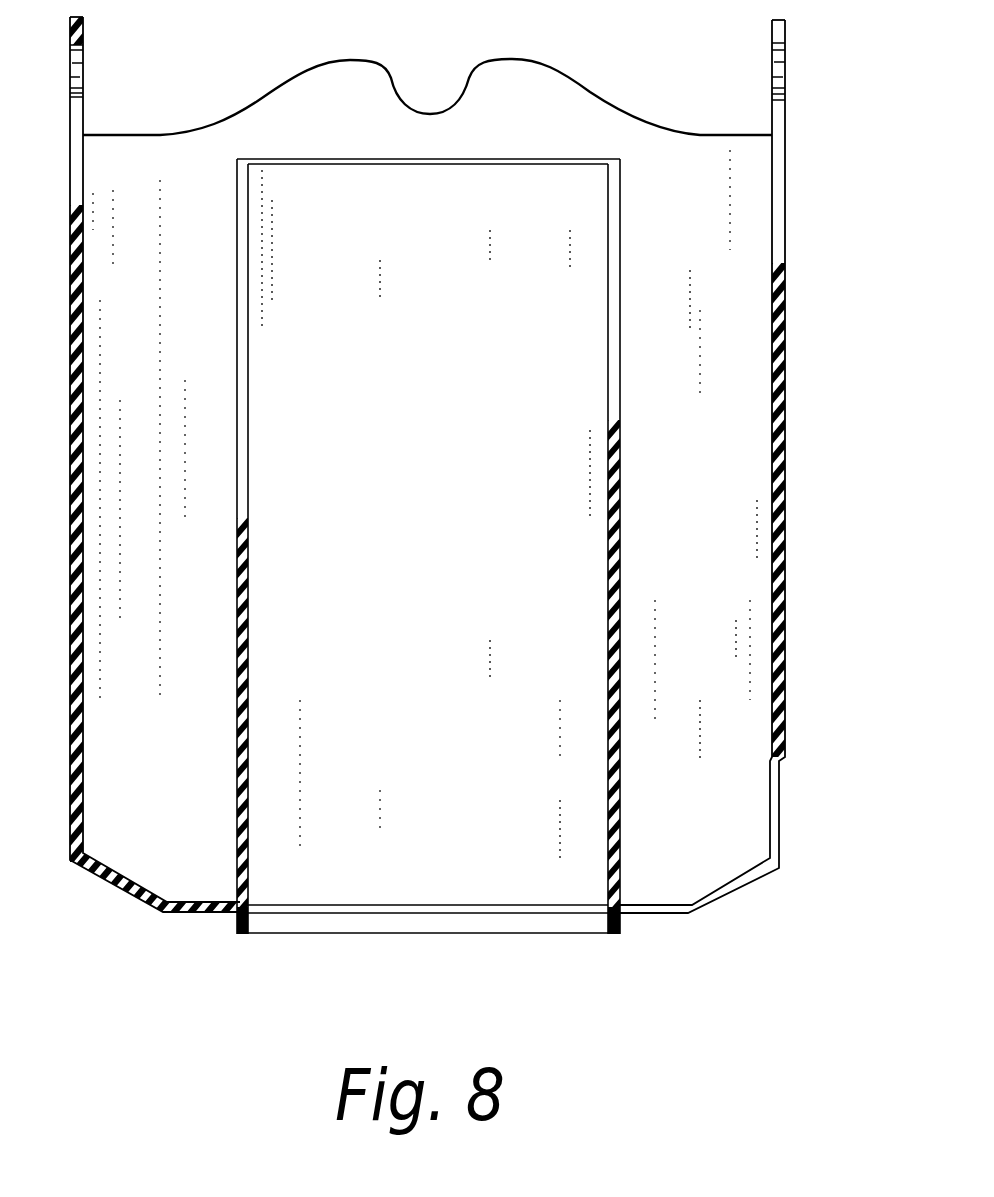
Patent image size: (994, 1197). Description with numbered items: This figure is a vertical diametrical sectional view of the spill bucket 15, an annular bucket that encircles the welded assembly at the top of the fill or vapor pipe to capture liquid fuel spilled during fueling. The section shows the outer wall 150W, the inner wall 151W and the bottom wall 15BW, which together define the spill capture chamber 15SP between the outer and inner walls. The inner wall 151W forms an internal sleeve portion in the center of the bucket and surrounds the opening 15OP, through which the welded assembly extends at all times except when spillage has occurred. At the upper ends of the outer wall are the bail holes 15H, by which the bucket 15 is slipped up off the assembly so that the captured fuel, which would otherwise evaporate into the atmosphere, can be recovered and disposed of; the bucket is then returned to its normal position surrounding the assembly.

The spill bucket 15 is at (790, 291).
The bail holes 15H is at (84, 66).
The inner wall 151W is at (249, 430).
The outer wall 150W is at (785, 560).
The spill capture chamber 15SP is at (707, 692).
The opening 15OP is at (426, 515).
The bottom wall 15BW is at (662, 918).